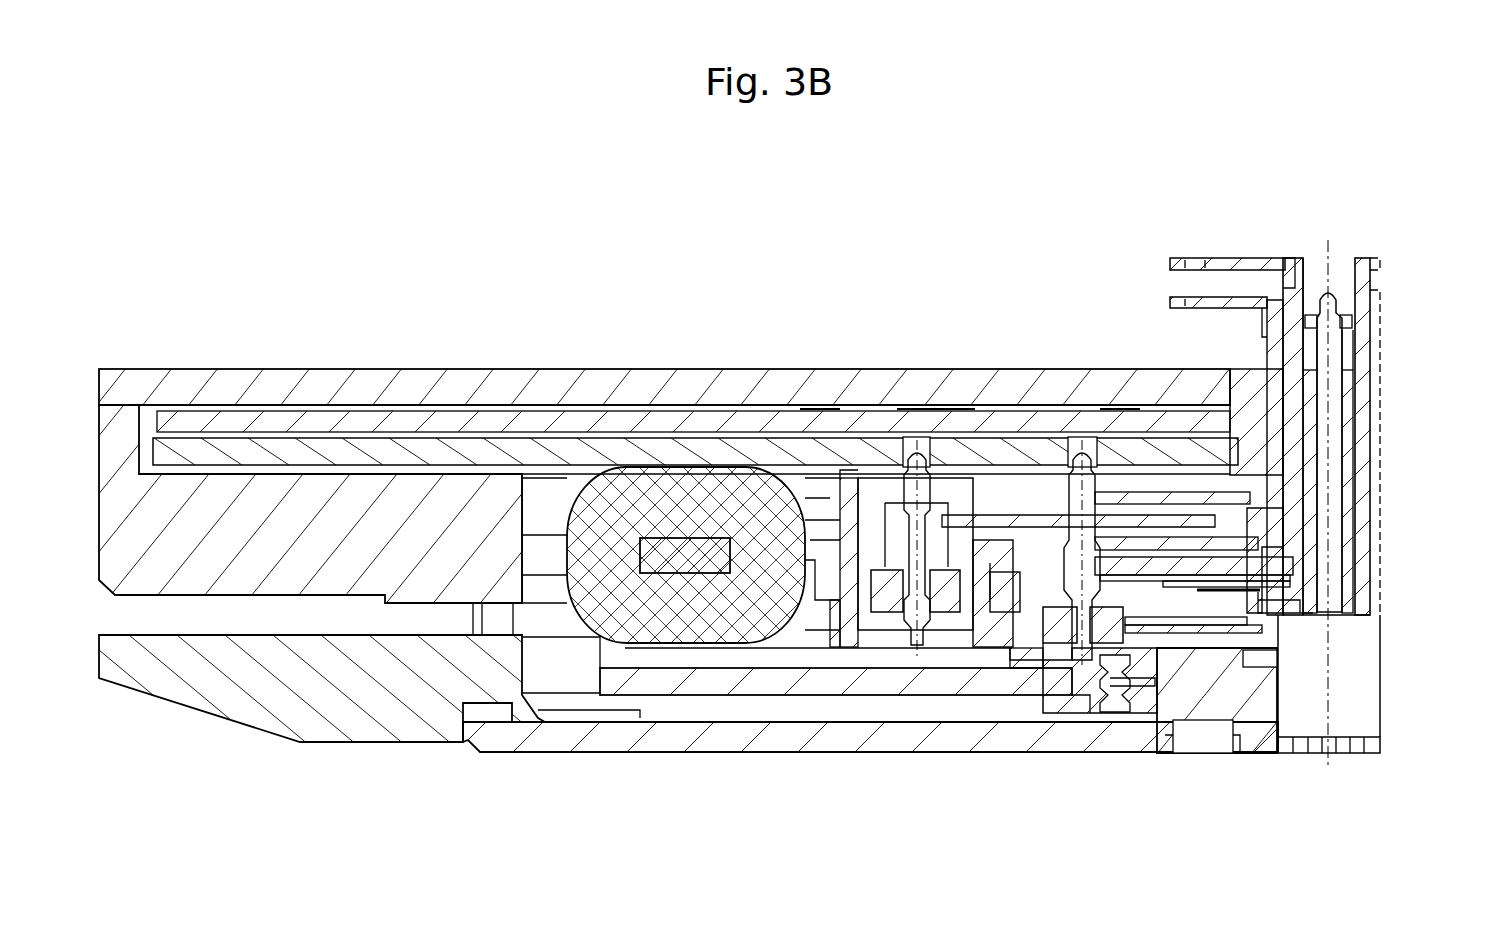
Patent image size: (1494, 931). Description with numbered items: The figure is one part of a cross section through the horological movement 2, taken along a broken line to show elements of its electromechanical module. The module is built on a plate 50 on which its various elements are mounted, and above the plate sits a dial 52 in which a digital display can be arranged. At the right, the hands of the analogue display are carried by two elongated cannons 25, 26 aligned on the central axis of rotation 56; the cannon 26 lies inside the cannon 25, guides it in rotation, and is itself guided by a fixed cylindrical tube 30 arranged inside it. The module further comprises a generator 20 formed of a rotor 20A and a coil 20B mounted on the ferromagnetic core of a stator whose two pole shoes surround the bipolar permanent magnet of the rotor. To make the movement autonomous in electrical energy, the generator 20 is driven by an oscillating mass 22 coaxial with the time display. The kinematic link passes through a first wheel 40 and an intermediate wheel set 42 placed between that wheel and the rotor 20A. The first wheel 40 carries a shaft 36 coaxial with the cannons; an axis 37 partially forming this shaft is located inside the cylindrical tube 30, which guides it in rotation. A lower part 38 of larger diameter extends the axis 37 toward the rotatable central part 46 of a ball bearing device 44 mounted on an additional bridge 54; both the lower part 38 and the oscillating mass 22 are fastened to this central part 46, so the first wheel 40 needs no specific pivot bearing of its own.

The horological movement 2 is at (556, 250).
The generator 20 is at (830, 650).
The rotor 20A is at (876, 506).
The coil 20B is at (663, 636).
The oscillating mass 22 is at (378, 705).
The cannon 25 is at (1275, 348).
The cannon 26 is at (1295, 320).
The cylindrical tube 30 is at (1348, 430).
The shaft 36 is at (1335, 482).
The axis 37 is at (1338, 408).
The lower part 38 is at (1347, 715).
The first wheel 40 is at (1232, 630).
The intermediate wheel set 42 is at (1043, 507).
The ball bearing device 44 is at (1098, 713).
The central part 46 is at (1173, 705).
The plate 50 is at (295, 455).
The dial 52 is at (424, 390).
The additional bridge 54 is at (985, 683).
The central axis of rotation 56 is at (1330, 668).